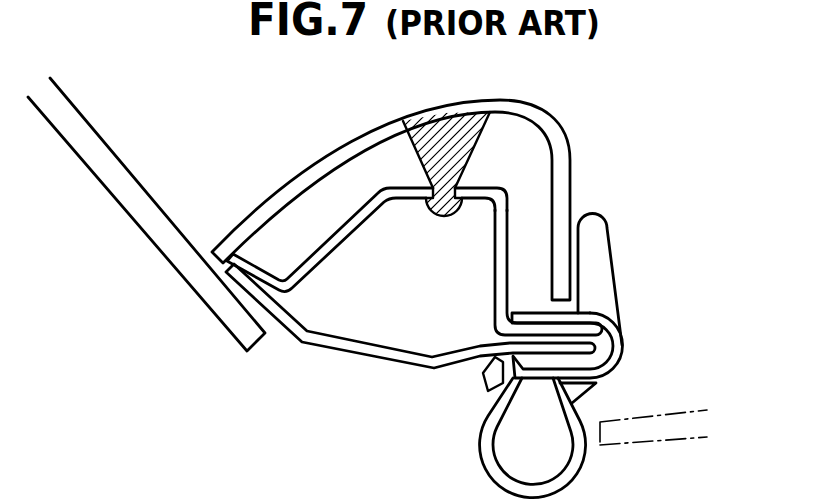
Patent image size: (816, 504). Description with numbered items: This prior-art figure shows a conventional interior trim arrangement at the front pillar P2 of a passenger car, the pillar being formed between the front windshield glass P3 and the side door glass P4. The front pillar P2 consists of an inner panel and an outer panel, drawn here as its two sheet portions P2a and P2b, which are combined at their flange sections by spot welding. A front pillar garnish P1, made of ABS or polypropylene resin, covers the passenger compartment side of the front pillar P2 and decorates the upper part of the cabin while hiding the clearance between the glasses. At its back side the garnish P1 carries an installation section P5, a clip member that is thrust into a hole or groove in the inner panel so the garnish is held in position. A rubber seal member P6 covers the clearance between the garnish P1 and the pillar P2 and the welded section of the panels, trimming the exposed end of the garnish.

The front pillar garnish P1 is at (575, 126).
The front pillar P2 is at (400, 291).
The upper arm of bracket P2a is at (326, 253).
The lower arm of bracket P2b is at (381, 354).
The front windshield glass P3 is at (100, 148).
The side door glass P4 is at (648, 441).
The installation section P5 is at (473, 156).
The seal member P6 is at (607, 291).